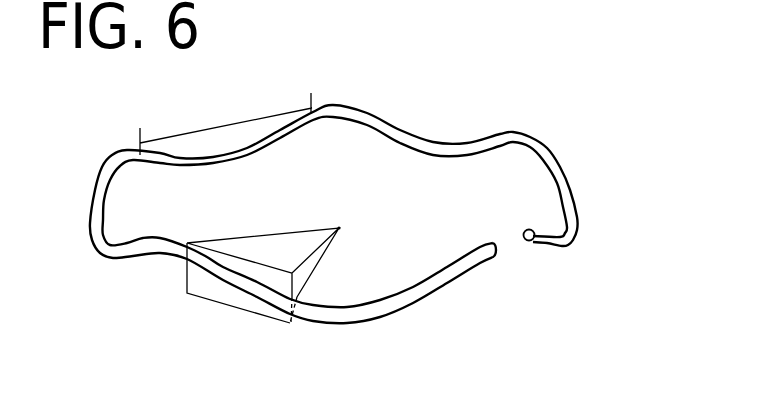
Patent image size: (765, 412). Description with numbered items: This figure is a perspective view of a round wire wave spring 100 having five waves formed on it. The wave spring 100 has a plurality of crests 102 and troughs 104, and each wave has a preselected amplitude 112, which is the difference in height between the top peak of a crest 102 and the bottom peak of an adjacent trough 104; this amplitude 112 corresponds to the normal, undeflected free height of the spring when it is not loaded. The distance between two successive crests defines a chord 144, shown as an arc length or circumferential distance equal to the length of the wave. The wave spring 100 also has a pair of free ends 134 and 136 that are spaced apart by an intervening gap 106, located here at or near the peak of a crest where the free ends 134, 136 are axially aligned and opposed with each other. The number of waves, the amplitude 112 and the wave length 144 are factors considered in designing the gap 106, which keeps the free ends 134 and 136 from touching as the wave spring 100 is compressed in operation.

The wave spring 100 is at (592, 246).
The crest 102 is at (340, 107).
The trough 104 is at (433, 143).
The gap 106 is at (512, 242).
The amplitude 112 is at (187, 278).
The free end 134 is at (490, 238).
The free end 136 is at (529, 229).
The chord 144 is at (237, 123).